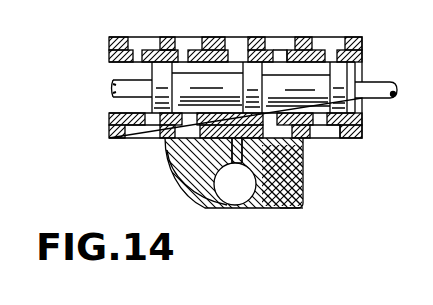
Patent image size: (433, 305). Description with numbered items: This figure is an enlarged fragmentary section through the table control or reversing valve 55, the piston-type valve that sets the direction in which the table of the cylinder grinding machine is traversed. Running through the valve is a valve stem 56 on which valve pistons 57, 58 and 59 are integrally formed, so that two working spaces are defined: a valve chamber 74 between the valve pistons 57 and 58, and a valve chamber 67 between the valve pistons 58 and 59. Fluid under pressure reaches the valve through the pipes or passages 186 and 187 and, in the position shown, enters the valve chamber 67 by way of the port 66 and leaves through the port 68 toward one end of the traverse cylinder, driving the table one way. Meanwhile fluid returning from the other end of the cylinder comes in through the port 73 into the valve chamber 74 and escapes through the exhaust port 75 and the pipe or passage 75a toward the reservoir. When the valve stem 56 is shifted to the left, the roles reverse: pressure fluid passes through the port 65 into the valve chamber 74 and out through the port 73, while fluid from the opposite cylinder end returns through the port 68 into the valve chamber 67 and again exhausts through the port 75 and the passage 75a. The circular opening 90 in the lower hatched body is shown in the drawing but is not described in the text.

The control or reversing valve 55 is at (356, 38).
The valve stem 56 is at (382, 86).
The valve piston 57 is at (161, 68).
The valve piston 58 is at (253, 70).
The valve piston 59 is at (347, 98).
The port 65 is at (150, 123).
The port 66 is at (317, 125).
The valve chamber 67 is at (304, 68).
The port 68 is at (279, 54).
The port 73 is at (187, 53).
The valve chamber 74 is at (215, 68).
The exhaust port 75 is at (245, 121).
The pipe or passage 75a is at (233, 163).
The hole 90 is at (246, 207).
The pipe or passage 186 is at (300, 213).
The pipe or passage 187 is at (173, 193).